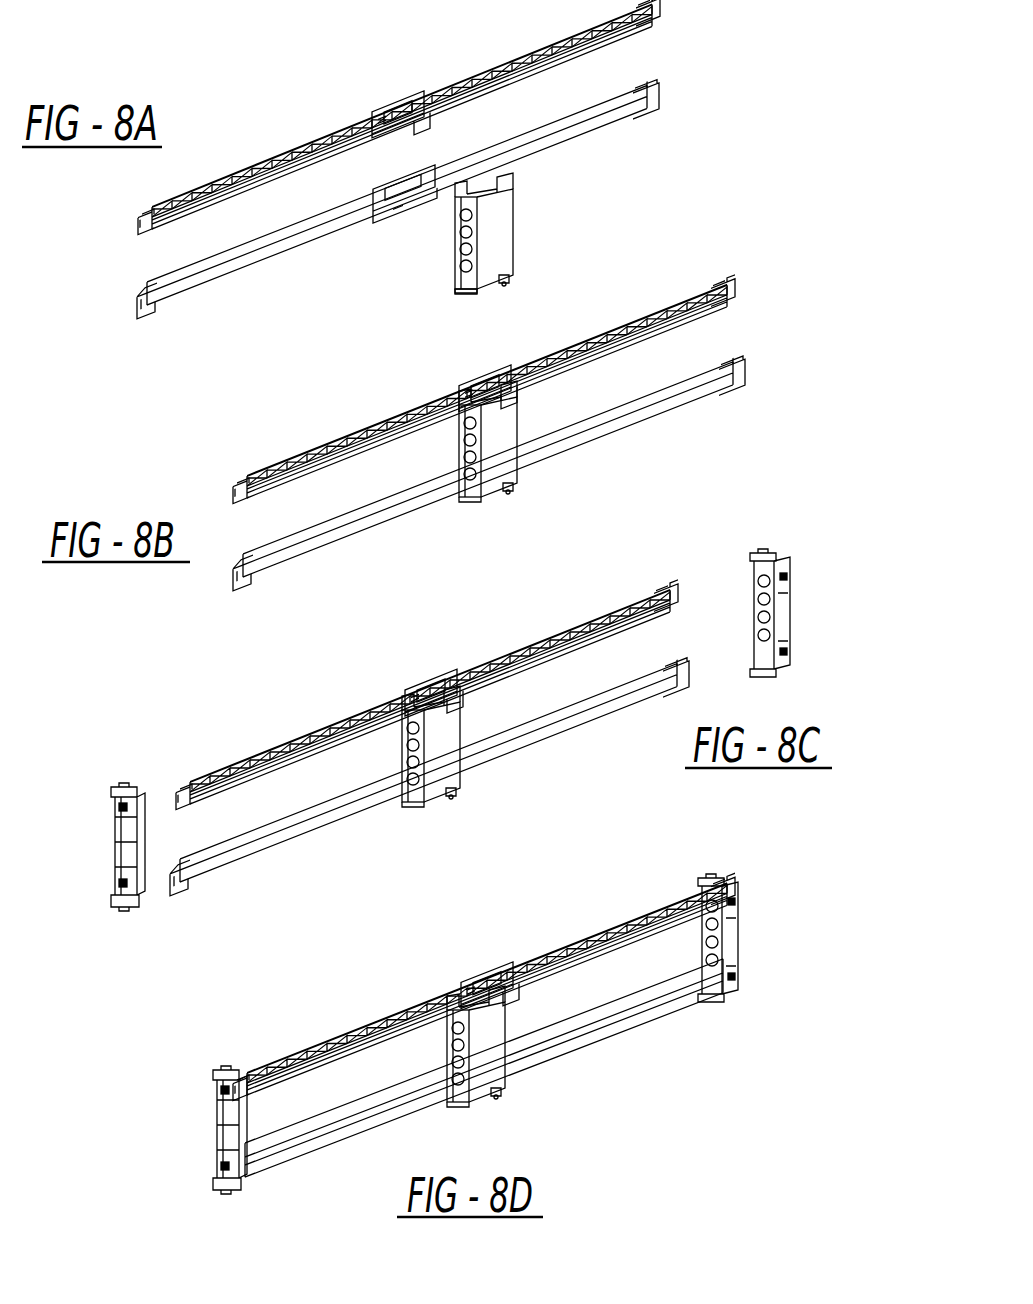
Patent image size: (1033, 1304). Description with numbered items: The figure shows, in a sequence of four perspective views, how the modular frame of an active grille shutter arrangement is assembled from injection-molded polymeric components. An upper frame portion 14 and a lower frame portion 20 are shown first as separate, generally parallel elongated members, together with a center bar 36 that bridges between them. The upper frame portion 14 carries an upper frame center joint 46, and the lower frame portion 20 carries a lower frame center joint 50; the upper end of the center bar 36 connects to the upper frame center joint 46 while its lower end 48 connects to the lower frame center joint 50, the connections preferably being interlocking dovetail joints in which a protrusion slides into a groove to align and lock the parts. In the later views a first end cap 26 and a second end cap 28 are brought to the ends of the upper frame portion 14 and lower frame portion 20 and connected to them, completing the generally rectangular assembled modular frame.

In FIG. 8A, the upper frame portion 14 is at (560, 42).
In FIG. 8B, the upper frame portion 14 is at (628, 326).
In FIG. 8C, the upper frame portion 14 is at (570, 627).
In FIG. 8D, the upper frame portion 14 is at (617, 917).
In FIG. 8A, the lower frame portion 20 is at (594, 114).
In FIG. 8B, the lower frame portion 20 is at (668, 396).
In FIG. 8C, the lower frame portion 20 is at (572, 715).
In FIG. 8D, the lower frame portion 20 is at (650, 997).
In FIG. 8C, the first end cap 26 is at (128, 840).
In FIG. 8D, the first end cap 26 is at (215, 1124).
In FIG. 8C, the second end cap 28 is at (790, 603).
In FIG. 8D, the second end cap 28 is at (731, 920).
In FIG. 8A, the center bar 36 is at (507, 233).
In FIG. 8B, the center bar 36 is at (505, 432).
In FIG. 8C, the center bar 36 is at (431, 746).
In FIG. 8D, the center bar 36 is at (476, 1046).
In FIG. 8A, the upper frame center joint 46 is at (388, 110).
In FIG. 8A, the lower end 48 is at (470, 292).
In FIG. 8A, the lower frame center joint 50 is at (408, 200).